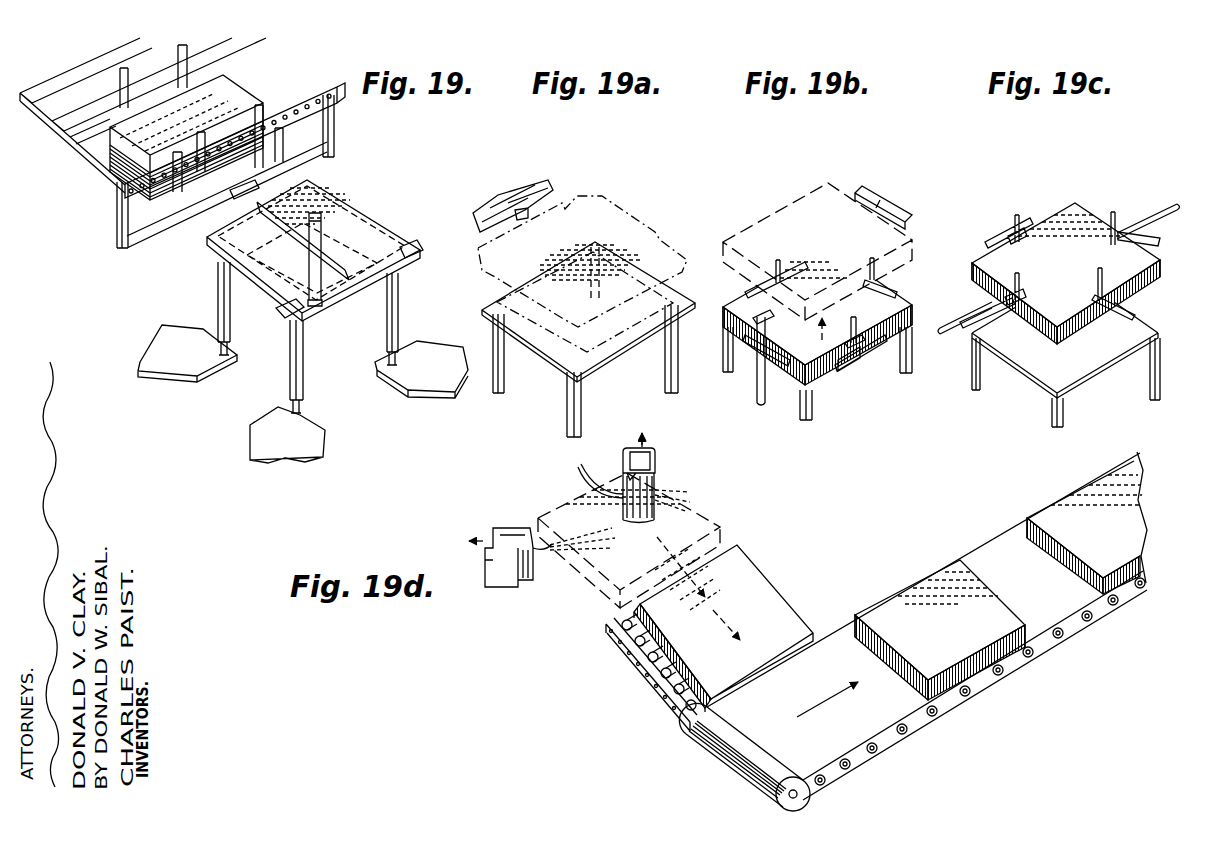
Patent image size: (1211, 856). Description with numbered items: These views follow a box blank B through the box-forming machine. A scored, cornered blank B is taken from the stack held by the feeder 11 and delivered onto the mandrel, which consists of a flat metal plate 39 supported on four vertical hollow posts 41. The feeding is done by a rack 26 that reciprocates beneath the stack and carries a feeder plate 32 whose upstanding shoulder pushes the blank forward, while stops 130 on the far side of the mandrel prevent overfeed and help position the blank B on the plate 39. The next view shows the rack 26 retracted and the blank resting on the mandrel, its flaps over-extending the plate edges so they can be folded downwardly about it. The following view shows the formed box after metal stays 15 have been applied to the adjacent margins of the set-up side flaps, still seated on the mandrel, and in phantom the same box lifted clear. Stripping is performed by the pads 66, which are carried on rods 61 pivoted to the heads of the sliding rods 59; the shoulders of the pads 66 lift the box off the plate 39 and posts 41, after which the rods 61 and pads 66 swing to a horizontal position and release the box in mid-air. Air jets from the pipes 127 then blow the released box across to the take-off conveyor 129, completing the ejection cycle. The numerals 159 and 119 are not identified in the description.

In FIG. 19, the box blank feeder 11 is at (97, 172).
In FIG. 19, the box blank B is at (217, 98).
In FIG. 19A, the box blank B is at (613, 250).
In FIG. 19B, the box blank B is at (790, 210).
In FIG. 19C, the box blank B is at (1063, 207).
In FIG. 19D, the box blank B is at (690, 500).
In FIG. 19, the feeder plate 32 is at (240, 203).
In FIG. 19, the flat metal plate 39 is at (355, 303).
In FIG. 19A, the flat metal plate 39 is at (559, 372).
In FIG. 19C, the flat metal plate 39 is at (1035, 375).
In FIG. 19, the rack 26 is at (308, 258).
In FIG. 19A, the rack 26 is at (527, 222).
In FIG. 19, the stops 130 is at (421, 244).
In FIG. 19, the hollow posts 41 is at (324, 226).
In FIG. 19A, the hollow posts 41 is at (504, 390).
In FIG. 19B, the hollow posts 41 is at (723, 343).
In FIG. 19C, the hollow posts 41 is at (972, 385).
In FIG. 19B, the metal stays 15 is at (723, 313).
In FIG. 19C, the metal stays 15 is at (972, 272).
In FIG. 19D, the metal stays 15 is at (630, 613).
In FIG. 19B, the pad 66 is at (787, 267).
In FIG. 19C, the pad 66 is at (1022, 218).
In FIG. 19B, the rod 61 is at (757, 388).
In FIG. 19C, the rod 61 is at (1160, 212).
In FIG. 19B, the rod 59 is at (762, 314).
In FIG. 19C, the clamp post 159 is at (1099, 268).
In FIG. 19D, the glue applicator nozzle 119 is at (657, 465).
In FIG. 19D, the pipes 127 is at (578, 472).
In FIG. 19D, the take-off conveyor 129 is at (826, 624).